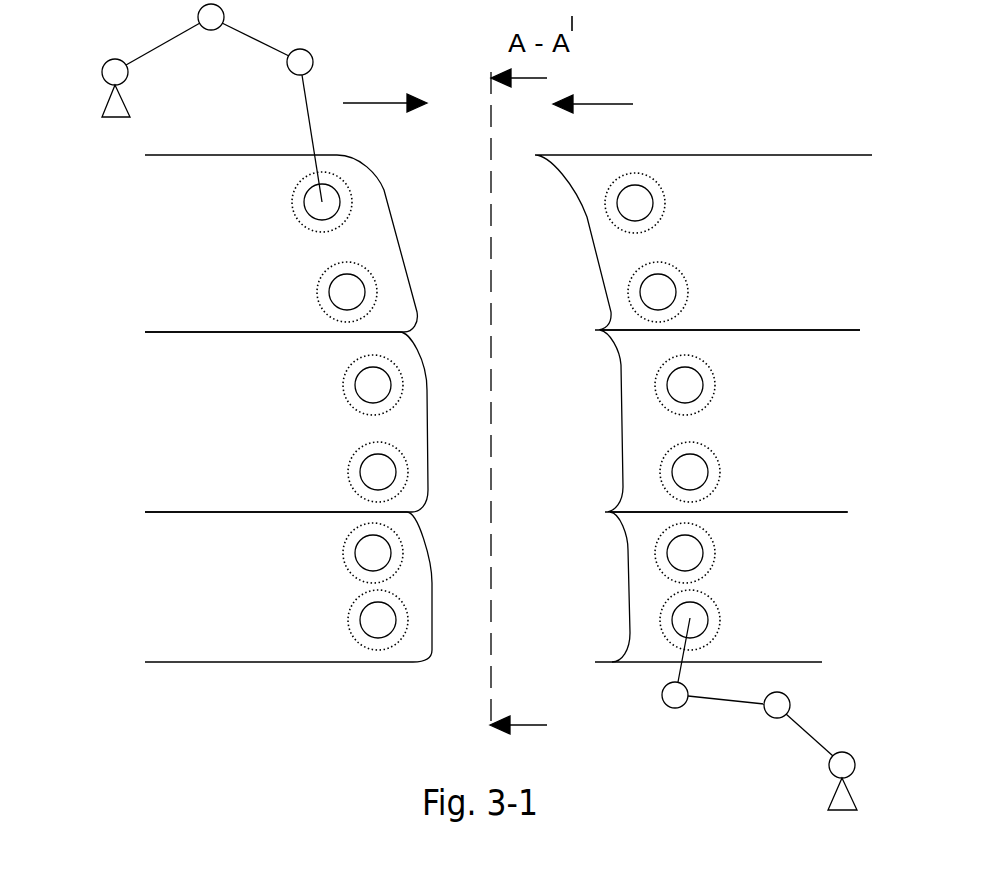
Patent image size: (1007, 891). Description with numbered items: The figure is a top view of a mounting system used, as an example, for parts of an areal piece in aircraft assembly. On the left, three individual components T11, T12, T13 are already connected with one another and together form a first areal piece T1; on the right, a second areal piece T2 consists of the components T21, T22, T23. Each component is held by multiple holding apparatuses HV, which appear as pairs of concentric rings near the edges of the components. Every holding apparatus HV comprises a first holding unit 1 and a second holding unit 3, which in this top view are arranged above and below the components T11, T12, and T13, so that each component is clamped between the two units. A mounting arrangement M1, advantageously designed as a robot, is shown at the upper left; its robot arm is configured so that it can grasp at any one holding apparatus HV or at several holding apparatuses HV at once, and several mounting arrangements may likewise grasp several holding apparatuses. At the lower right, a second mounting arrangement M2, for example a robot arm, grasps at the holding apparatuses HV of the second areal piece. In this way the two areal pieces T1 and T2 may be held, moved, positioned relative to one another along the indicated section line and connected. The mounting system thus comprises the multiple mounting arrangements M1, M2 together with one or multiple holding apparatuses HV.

The first holding unit 1 is at (340, 203).
The second holding unit 3 is at (308, 232).
The holding apparatus HV is at (365, 400).
The areal piece T1 is at (87, 155).
The areal piece T2 is at (853, 110).
The component T11 is at (286, 240).
The component T12 is at (286, 422).
The component T13 is at (288, 587).
The component T21 is at (703, 242).
The component T22 is at (730, 421).
The component T23 is at (721, 587).
The mounting arrangement M1 is at (212, 103).
The mounting arrangement M2 is at (782, 714).